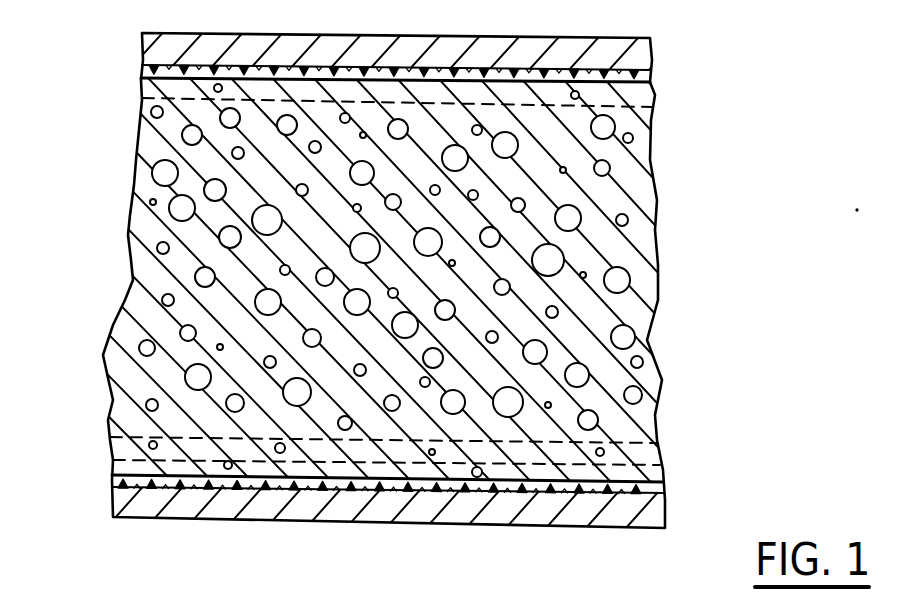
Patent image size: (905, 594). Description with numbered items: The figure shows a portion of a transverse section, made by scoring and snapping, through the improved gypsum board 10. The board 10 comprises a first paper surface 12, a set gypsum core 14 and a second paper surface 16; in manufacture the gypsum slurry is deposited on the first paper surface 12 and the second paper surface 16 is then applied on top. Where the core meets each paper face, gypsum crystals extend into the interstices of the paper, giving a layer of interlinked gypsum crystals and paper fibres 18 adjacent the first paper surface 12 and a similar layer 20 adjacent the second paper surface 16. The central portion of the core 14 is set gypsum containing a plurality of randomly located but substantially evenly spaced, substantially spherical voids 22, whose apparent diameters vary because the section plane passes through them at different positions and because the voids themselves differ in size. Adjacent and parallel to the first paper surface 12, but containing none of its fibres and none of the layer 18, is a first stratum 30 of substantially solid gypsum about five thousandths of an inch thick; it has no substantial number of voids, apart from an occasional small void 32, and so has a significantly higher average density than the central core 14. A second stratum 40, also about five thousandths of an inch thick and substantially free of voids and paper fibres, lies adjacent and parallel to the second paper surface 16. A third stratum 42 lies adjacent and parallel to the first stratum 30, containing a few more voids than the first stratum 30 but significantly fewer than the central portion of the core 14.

The board 10 is at (118, 186).
The first paper surface 12 is at (656, 518).
The set gypsum core 14 is at (650, 272).
The second paper surface 16 is at (640, 57).
The layer of interlinked gypsum crystals and paper fibres 18 is at (660, 485).
The layer of interlinked gypsum crystals and paper fibres 20 is at (650, 84).
The voids 22 is at (628, 220).
The first stratum 30 is at (123, 462).
The small void 32 is at (481, 477).
The second stratum 40 is at (140, 82).
The third stratum 42 is at (118, 443).